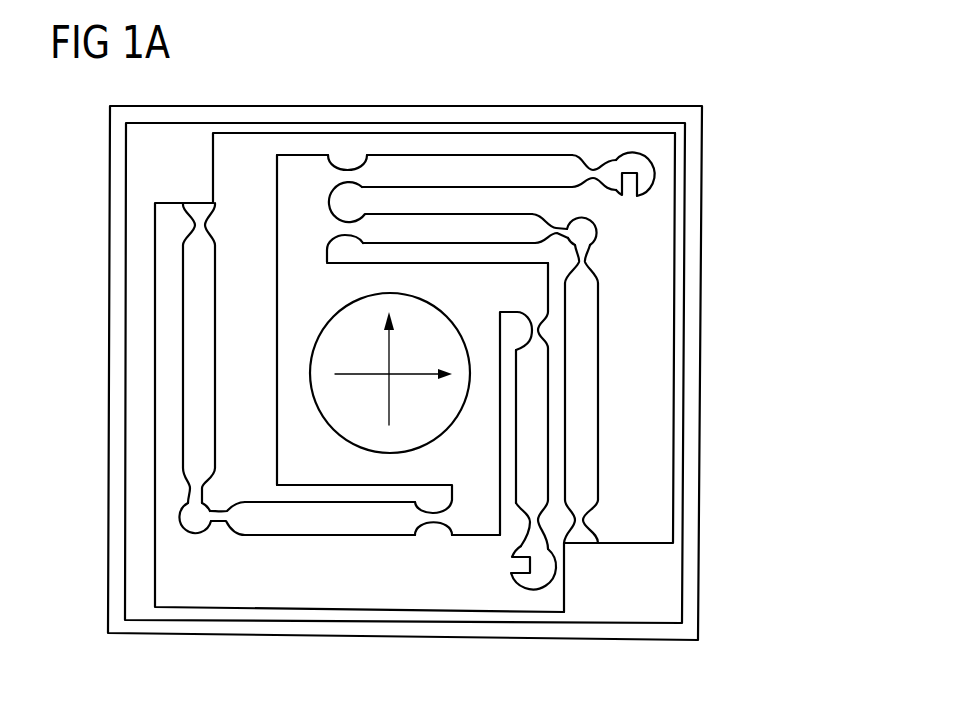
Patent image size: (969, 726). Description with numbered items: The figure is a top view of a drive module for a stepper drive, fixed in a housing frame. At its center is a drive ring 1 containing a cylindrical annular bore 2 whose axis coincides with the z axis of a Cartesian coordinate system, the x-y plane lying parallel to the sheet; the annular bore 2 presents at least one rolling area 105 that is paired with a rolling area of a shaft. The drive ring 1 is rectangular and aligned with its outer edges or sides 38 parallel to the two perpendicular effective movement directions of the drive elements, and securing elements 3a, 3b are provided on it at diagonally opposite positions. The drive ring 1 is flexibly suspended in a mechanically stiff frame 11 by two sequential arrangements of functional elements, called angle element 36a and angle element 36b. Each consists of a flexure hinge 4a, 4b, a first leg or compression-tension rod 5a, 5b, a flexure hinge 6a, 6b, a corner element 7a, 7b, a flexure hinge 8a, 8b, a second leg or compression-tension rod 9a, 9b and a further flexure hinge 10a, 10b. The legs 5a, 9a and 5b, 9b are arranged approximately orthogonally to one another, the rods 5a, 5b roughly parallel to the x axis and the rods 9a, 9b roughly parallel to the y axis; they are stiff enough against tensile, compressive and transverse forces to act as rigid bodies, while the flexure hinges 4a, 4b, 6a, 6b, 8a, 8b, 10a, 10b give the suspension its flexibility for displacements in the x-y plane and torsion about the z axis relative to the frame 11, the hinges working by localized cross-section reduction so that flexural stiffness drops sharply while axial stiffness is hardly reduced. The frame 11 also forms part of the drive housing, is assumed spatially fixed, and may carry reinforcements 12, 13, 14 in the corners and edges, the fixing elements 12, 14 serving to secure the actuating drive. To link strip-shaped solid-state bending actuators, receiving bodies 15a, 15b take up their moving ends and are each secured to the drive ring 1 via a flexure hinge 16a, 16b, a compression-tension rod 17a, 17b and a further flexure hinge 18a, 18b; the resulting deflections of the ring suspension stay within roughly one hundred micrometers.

The drive ring 1 is at (290, 283).
The cylindrical annular bore 2 is at (322, 382).
The securing element 3a is at (424, 123).
The securing element 3b is at (559, 429).
The flexure hinge 4a is at (347, 240).
The flexure hinge 4b is at (432, 523).
The first leg (compression-tension rod) 5a is at (443, 225).
The first leg (compression-tension rod) 5b is at (315, 530).
The flexure hinge 6a is at (552, 237).
The flexure hinge 6b is at (227, 516).
The corner element 7a is at (588, 233).
The corner element 7b is at (195, 521).
The flexure hinge 8a is at (585, 262).
The flexure hinge 8b is at (196, 489).
The second leg (compression-tension rod) 9a is at (583, 390).
The second leg (compression-tension rod) 9b is at (190, 345).
The flexure hinge 10a is at (585, 522).
The flexure hinge 10b is at (195, 224).
The frame 11 is at (120, 585).
The reinforcement (fixing element) 12 is at (672, 583).
The reinforcement 13 is at (135, 470).
The reinforcement (fixing element) 14 is at (140, 151).
The receiving body 15a is at (632, 162).
The receiving body 15b is at (544, 592).
The flexure hinge 16a is at (593, 172).
The flexure hinge 16b is at (560, 548).
The compression-tension rod 17a is at (458, 172).
The compression-tension rod 17b is at (535, 432).
The flexure hinge 18a is at (347, 170).
The flexure hinge 18b is at (538, 330).
The angle element 36a is at (513, 208).
The angle element 36b is at (163, 437).
The edges or sides 38 is at (392, 496).
The rolling area 105 is at (458, 345).